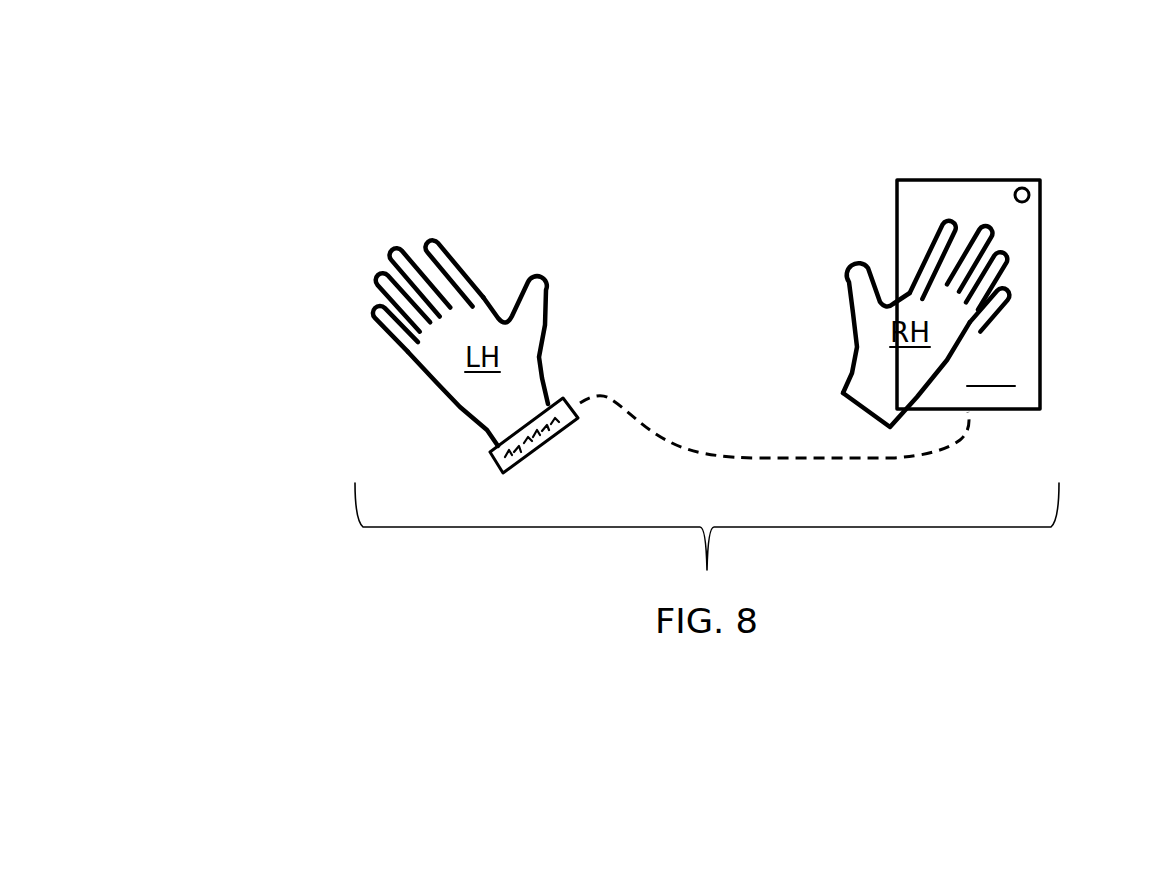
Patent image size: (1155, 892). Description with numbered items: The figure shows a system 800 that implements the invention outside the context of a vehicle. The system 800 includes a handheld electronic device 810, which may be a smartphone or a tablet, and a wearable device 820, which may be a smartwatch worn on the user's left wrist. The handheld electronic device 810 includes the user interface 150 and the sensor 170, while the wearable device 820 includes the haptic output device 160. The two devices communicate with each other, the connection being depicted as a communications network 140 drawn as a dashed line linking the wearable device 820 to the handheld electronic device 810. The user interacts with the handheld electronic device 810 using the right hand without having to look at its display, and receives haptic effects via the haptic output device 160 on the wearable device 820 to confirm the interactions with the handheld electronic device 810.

The system 800 is at (340, 175).
The handheld electronic device 810 is at (975, 275).
The sensor 170 is at (1026, 189).
The user interface 150 is at (991, 372).
The wearable device 820 is at (515, 437).
The haptic output device 160 is at (544, 444).
The communications network 140 is at (790, 458).